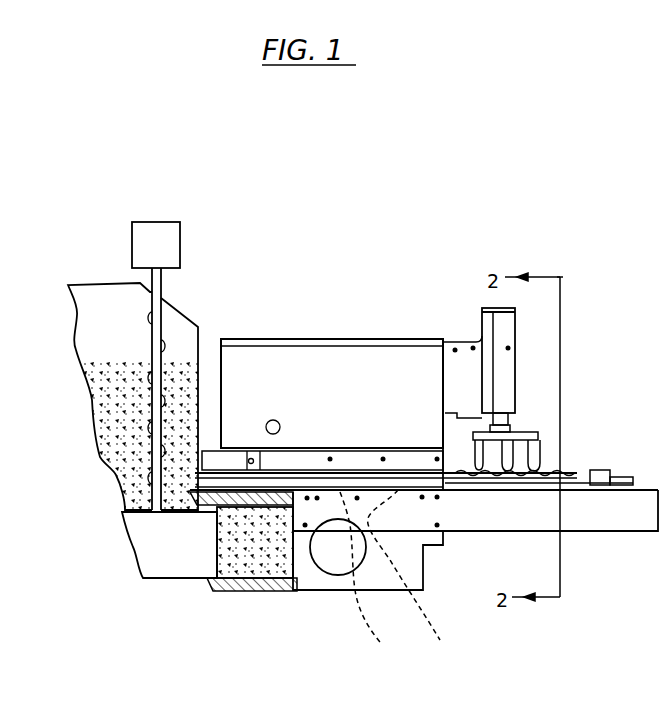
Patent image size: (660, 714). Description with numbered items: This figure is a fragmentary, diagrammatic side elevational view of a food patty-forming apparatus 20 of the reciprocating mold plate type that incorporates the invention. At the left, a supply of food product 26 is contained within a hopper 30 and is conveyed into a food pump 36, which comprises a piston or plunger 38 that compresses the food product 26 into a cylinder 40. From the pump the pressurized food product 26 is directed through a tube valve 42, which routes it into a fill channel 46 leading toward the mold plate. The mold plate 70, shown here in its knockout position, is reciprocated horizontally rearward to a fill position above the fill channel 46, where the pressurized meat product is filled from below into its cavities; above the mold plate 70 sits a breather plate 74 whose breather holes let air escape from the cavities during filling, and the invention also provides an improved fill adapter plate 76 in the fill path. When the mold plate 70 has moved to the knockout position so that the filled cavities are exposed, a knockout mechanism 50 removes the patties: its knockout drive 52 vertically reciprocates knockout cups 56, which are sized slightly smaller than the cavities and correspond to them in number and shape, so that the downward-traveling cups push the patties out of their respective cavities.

The food patty-forming apparatus 20 is at (330, 302).
The food product 26 is at (116, 350).
The hopper 30 is at (163, 338).
The food pump 36 is at (198, 327).
The piston or plunger 38 is at (162, 570).
The cylinder 40 is at (242, 592).
The tube valve 42 is at (382, 645).
The fill channel 46 is at (443, 643).
The knockout mechanism 50 is at (567, 357).
The knockout drive 52 is at (517, 383).
The knockout cups 56 is at (541, 457).
The mold plate 70 is at (570, 470).
The breather plate 74 is at (365, 473).
The fill adapter plate 76 is at (297, 482).